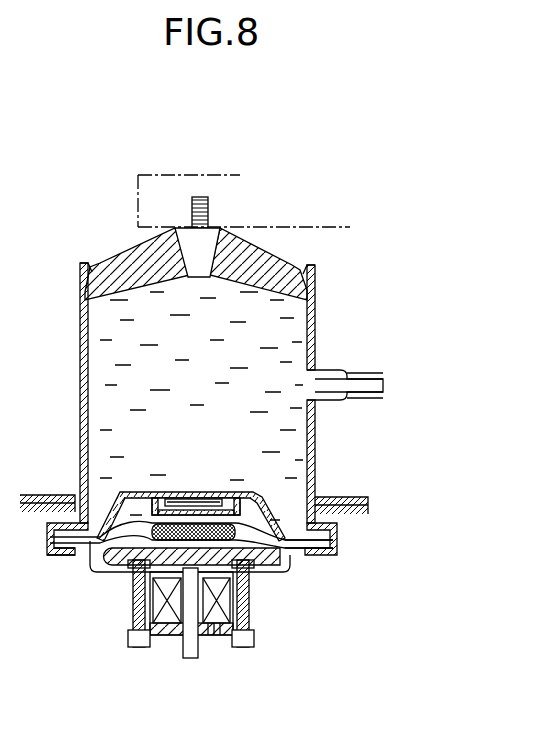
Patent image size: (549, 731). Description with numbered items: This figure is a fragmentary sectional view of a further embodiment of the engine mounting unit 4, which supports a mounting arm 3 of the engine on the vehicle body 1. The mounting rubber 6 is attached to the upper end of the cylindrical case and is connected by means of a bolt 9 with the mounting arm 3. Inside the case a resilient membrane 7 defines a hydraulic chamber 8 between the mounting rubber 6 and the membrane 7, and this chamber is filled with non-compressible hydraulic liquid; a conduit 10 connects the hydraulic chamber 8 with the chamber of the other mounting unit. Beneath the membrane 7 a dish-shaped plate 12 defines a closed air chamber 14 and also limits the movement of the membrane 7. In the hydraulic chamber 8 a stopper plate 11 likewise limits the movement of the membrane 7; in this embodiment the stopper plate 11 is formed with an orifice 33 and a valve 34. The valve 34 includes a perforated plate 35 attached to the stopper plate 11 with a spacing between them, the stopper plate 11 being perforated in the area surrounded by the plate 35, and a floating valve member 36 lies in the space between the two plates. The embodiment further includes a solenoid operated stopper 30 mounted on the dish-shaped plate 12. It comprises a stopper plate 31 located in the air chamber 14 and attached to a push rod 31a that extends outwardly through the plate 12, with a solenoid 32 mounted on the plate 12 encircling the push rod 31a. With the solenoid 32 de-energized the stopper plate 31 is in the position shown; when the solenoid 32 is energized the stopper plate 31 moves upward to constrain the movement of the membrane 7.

The vehicle body 1 is at (355, 510).
The mounting arm 3 is at (307, 160).
The mounting unit 4 is at (296, 261).
The mounting rubber 6 is at (260, 262).
The resilient membrane 7 is at (288, 567).
The hydraulic chamber 8 is at (97, 333).
The bolt 9 is at (190, 215).
The conduit 10 is at (357, 400).
The stopper plate 11 is at (100, 510).
The dish-shaped plate 12 is at (90, 563).
The air chamber 14 is at (87, 553).
The solenoid operated stopper 30 is at (270, 624).
The stopper plate 31 is at (132, 577).
The push rod 31a is at (190, 640).
The solenoid 32 is at (212, 640).
The orifice 33 is at (96, 500).
The valve 34 is at (180, 478).
The perforated plate 35 is at (230, 497).
The floating valve member 36 is at (198, 496).